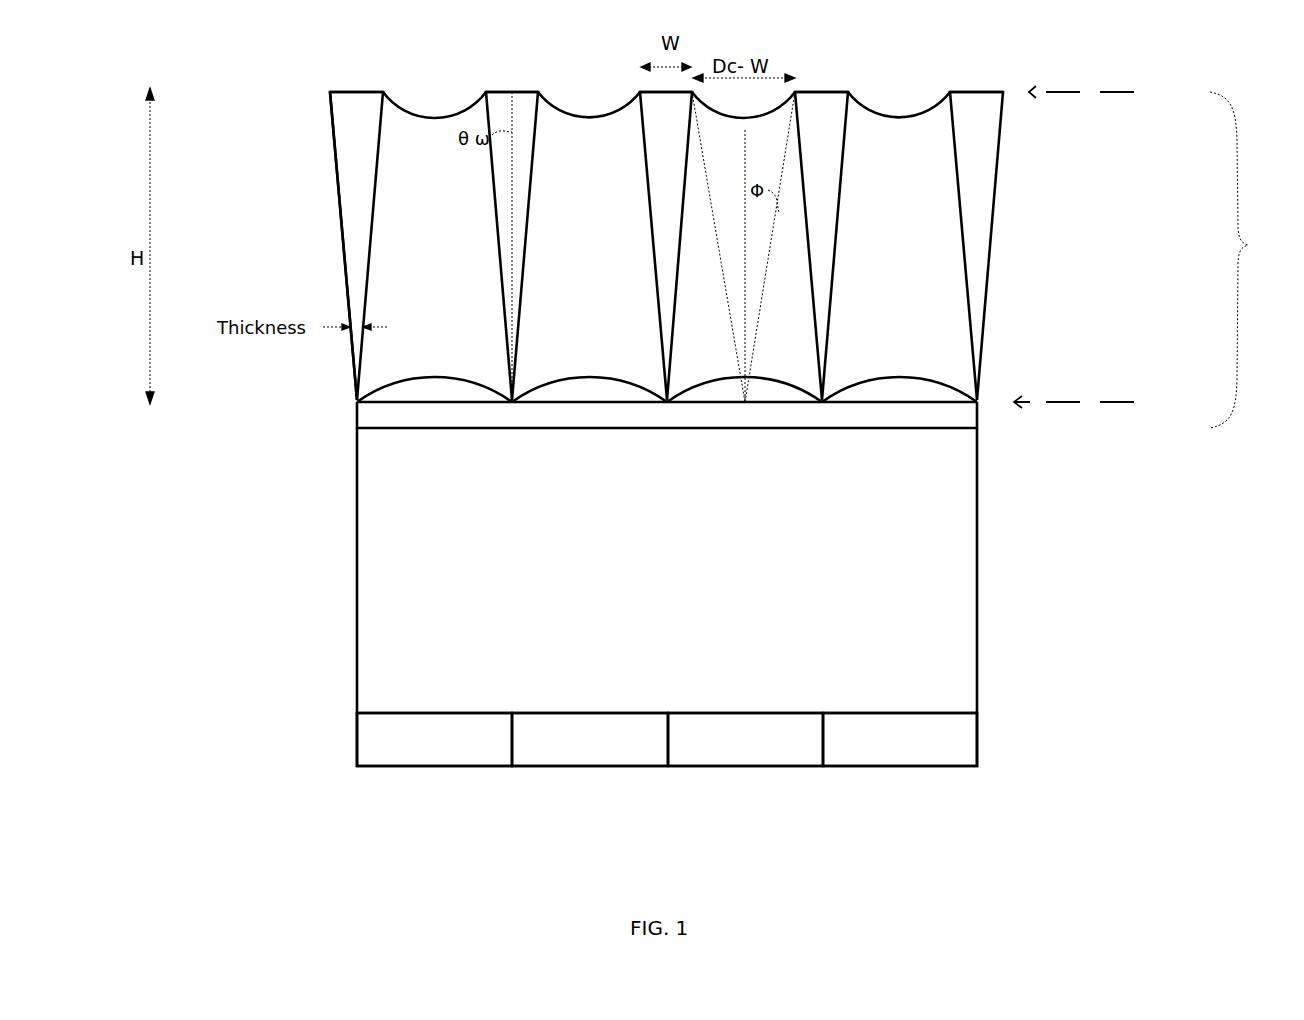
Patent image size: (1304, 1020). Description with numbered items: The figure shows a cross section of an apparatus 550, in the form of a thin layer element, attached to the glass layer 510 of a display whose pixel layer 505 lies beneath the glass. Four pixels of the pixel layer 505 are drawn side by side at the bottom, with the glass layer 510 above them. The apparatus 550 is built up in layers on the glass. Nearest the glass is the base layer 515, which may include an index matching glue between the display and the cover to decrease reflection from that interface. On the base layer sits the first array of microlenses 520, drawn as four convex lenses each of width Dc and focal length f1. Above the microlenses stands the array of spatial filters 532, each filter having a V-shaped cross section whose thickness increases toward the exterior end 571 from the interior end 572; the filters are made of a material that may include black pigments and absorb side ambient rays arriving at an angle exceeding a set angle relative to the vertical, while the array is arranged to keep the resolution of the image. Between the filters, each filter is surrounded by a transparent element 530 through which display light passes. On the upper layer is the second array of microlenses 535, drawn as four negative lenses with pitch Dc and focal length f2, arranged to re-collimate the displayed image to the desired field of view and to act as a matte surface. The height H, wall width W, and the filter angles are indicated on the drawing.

The pixel layer 505 is at (552, 768).
The glass layer 510 is at (686, 582).
The base layer 515 is at (686, 426).
The first array of microlenses 520 is at (330, 403).
The transparent element 530 is at (455, 243).
The array of spatial filters 532 is at (333, 155).
The second array of microlenses 535 is at (320, 92).
The apparatus 550 is at (1257, 260).
The exterior end 571 is at (1104, 93).
The interior end 572 is at (1098, 395).